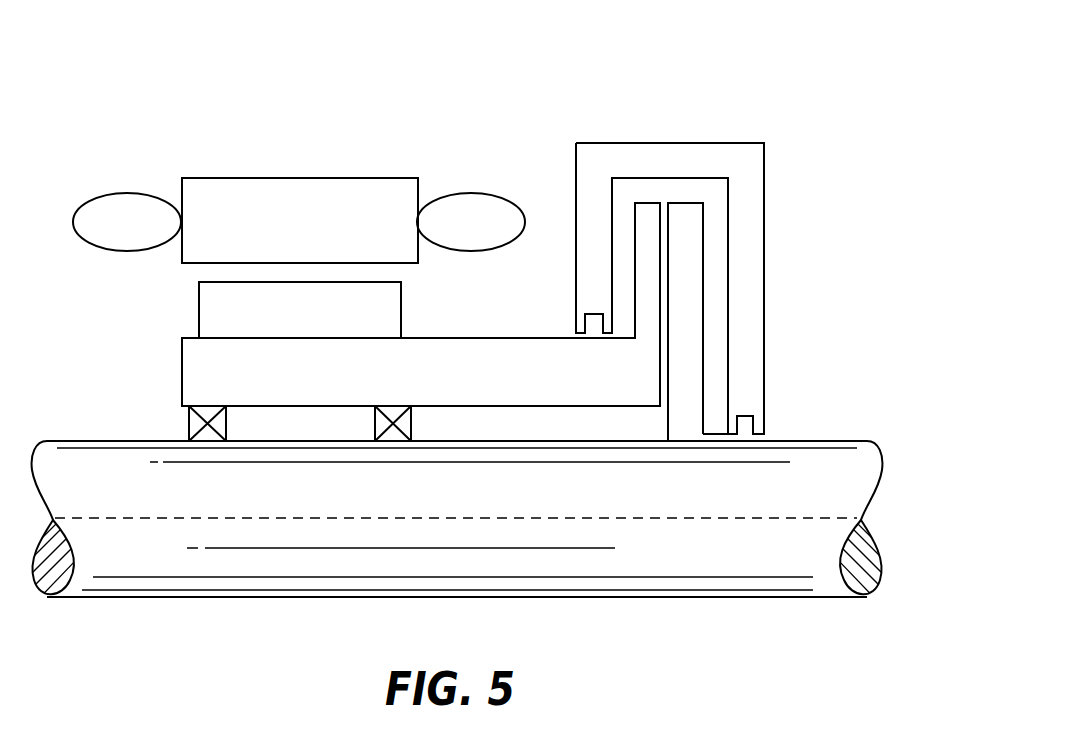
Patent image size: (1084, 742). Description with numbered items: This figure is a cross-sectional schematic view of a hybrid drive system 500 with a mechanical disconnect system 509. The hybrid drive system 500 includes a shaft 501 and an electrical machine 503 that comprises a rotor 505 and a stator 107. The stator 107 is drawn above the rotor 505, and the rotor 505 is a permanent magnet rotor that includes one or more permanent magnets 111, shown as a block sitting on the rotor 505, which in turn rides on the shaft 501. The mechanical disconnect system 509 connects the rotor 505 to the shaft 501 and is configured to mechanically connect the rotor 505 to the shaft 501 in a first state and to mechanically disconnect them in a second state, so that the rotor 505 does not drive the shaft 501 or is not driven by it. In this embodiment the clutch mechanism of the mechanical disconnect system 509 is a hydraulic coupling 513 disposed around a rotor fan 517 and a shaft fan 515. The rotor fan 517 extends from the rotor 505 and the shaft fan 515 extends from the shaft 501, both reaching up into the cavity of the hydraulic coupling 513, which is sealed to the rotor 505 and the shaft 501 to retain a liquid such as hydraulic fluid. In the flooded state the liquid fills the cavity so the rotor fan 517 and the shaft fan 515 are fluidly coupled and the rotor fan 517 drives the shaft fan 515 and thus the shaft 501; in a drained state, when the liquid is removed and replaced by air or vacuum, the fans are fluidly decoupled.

The hybrid drive system 500 is at (833, 92).
The electrical machine 503 is at (148, 152).
The stator 107 is at (267, 192).
The permanent magnets 111 is at (317, 325).
The rotor 505 is at (197, 377).
The mechanical disconnect system 509 is at (692, 107).
The hydraulic coupling 513 is at (737, 336).
The shaft fan 515 is at (690, 364).
The rotor fan 517 is at (648, 263).
The shaft 501 is at (685, 573).